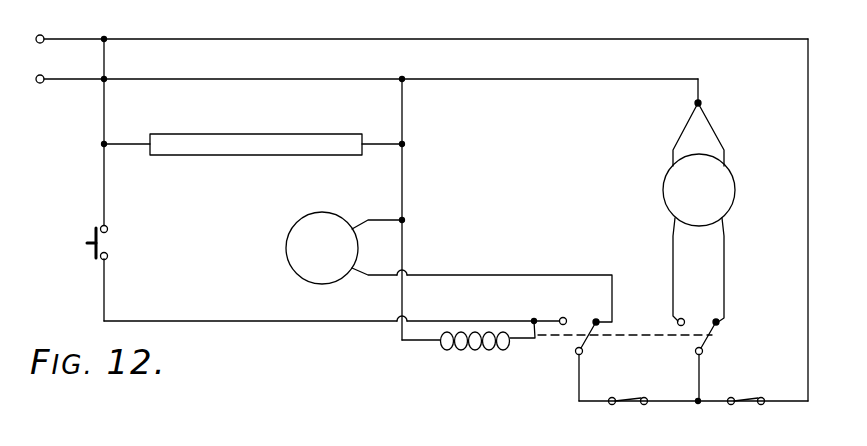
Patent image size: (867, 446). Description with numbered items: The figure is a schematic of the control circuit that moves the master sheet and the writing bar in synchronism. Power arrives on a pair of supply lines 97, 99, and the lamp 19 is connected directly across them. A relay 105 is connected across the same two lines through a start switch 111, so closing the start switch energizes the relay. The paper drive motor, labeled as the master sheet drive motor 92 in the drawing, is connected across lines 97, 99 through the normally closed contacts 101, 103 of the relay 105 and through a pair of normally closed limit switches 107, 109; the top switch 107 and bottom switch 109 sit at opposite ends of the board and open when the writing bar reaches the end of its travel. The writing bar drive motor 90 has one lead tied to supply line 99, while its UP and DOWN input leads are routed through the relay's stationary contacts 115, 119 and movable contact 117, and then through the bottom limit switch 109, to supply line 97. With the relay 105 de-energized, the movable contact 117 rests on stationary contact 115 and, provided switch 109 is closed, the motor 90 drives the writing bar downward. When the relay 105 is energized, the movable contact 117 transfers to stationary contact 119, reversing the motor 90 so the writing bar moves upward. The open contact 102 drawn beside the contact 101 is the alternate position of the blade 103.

The power supply line 97 is at (456, 39).
The power supply line 99 is at (473, 79).
The lamp 19 is at (199, 134).
The start switch 111 is at (94, 233).
The master sheet drive motor 92 is at (292, 273).
The writing bar drive motor 90 is at (735, 182).
The relay 105 is at (463, 351).
The contact 102 is at (560, 318).
The normally closed contact 101 is at (604, 316).
The normally closed contact 103 is at (588, 342).
The stationary contact 119 is at (677, 322).
The stationary contact 115 is at (718, 325).
The movable contact 117 is at (708, 342).
The top limit switch 107 is at (629, 398).
The bottom limit switch 109 is at (757, 384).